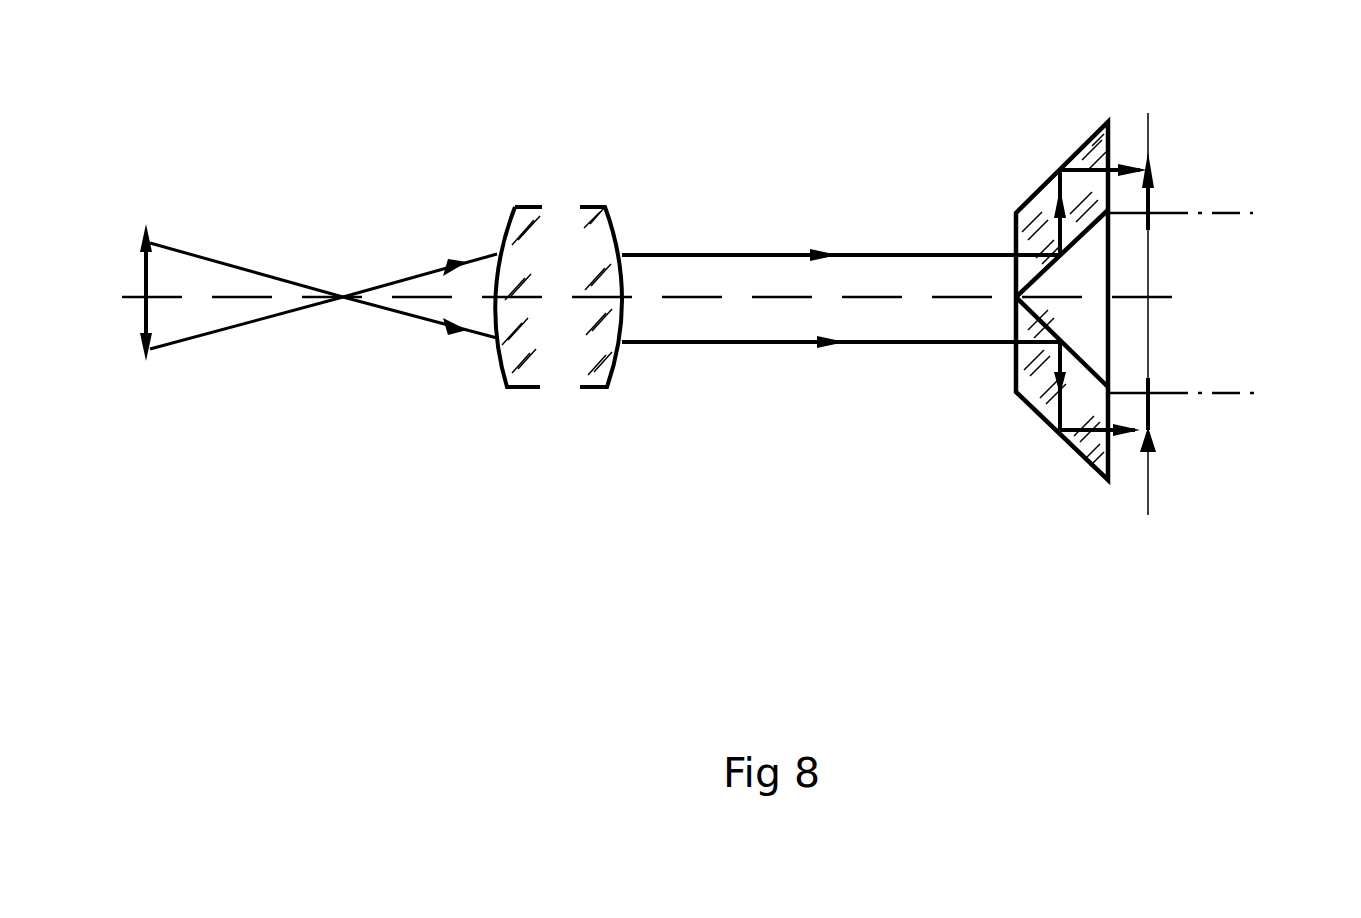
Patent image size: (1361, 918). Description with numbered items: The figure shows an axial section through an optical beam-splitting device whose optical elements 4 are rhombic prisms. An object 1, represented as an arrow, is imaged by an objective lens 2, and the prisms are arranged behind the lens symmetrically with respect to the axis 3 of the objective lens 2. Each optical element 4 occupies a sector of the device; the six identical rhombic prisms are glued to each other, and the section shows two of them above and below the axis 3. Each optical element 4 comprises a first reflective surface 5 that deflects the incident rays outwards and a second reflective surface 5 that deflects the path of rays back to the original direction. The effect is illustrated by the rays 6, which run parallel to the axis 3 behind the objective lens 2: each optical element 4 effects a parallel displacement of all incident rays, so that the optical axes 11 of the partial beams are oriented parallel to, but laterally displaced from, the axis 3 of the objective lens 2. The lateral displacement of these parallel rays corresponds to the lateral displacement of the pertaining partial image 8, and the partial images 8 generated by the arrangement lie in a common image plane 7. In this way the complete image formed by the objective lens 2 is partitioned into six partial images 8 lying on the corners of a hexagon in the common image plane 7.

The object 1 is at (152, 266).
The objective lens 2 is at (563, 252).
The axis of the objective lens 3 is at (762, 298).
The optical element 4 is at (1087, 193).
The reflective surface 5 is at (1180, 330).
The rays 6 is at (885, 250).
The image plane 7 is at (1143, 508).
The partial images 8 is at (1150, 390).
The optical axes of the partial beams 11 is at (1245, 213).